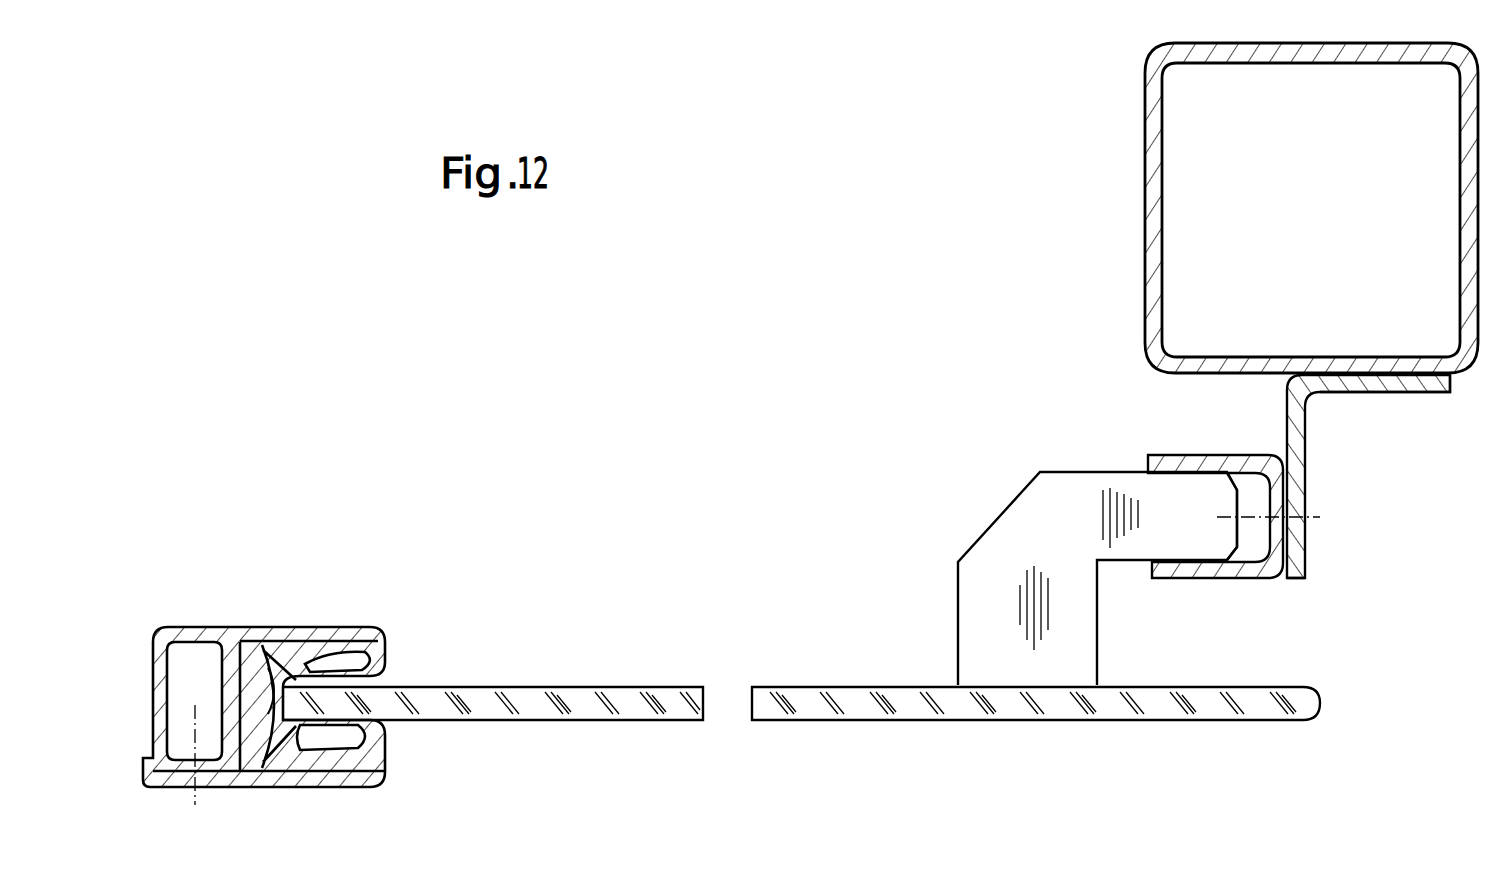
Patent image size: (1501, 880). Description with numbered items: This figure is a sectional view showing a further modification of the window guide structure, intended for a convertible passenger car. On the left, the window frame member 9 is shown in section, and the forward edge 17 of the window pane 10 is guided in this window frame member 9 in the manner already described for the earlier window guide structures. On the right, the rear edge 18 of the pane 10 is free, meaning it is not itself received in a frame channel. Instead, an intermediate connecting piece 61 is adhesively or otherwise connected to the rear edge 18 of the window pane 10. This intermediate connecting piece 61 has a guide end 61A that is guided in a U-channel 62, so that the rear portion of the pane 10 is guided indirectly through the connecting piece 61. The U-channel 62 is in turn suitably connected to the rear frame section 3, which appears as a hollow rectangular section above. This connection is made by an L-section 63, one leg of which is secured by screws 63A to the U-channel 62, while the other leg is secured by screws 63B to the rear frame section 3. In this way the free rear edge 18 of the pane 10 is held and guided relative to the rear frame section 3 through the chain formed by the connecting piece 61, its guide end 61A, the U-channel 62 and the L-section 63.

The rear frame section 3 is at (1136, 198).
The window frame member 9 is at (219, 616).
The window pane 10 is at (578, 698).
The forward edge 17 is at (287, 705).
The rear edge 18 is at (1295, 698).
The intermediate connecting piece 61 is at (1012, 557).
The guide end 61A is at (1190, 535).
The U-channel 62 is at (1158, 453).
The L-section 63 is at (1297, 447).
The screws 63A is at (1332, 517).
The screws 63B is at (1375, 333).